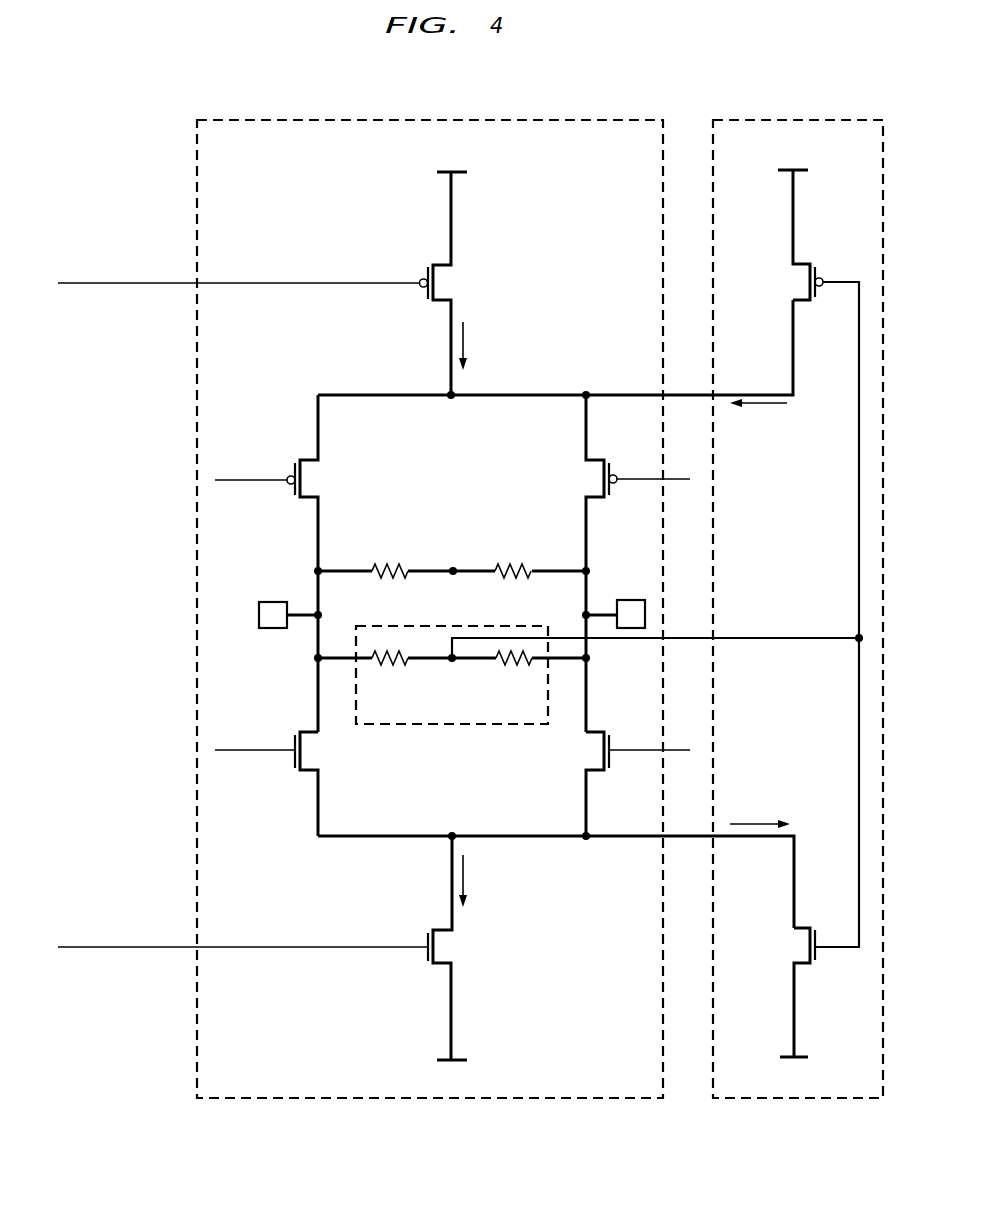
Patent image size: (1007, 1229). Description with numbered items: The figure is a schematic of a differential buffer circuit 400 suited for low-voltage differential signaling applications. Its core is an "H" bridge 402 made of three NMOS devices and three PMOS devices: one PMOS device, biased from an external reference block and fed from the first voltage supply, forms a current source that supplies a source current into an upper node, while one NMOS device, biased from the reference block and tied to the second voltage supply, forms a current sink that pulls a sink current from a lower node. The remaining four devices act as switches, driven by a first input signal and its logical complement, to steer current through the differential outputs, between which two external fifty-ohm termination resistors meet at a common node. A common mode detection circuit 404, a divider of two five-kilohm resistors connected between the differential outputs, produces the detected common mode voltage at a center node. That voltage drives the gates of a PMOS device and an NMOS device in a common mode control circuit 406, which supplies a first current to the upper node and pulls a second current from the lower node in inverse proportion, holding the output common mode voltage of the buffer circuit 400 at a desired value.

The buffer circuit 400 is at (180, 64).
The "H" bridge 402 is at (560, 120).
The common mode detection circuit 404 is at (462, 725).
The common mode control circuit 406 is at (778, 120).